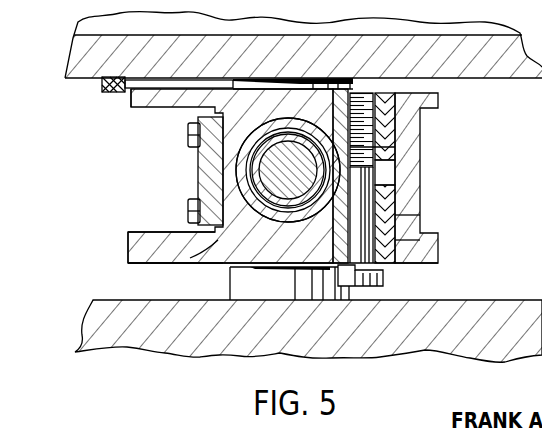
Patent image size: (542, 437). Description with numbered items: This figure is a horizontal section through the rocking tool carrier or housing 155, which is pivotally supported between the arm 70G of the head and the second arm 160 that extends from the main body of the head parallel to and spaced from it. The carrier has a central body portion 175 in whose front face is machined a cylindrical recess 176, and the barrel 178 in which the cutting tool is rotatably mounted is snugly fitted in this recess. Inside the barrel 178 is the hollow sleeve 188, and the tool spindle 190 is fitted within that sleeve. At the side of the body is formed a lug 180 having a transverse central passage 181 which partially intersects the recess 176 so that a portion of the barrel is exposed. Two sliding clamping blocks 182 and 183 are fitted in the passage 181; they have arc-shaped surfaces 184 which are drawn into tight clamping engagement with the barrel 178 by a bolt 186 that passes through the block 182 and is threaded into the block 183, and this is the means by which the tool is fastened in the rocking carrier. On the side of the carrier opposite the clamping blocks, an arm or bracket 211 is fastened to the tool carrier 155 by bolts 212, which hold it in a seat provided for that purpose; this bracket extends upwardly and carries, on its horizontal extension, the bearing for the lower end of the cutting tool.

The rocking tool carrier or housing 155 is at (376, 18).
The platen section 70G is at (475, 75).
The second arm 160 is at (473, 300).
The central body portion 175 is at (178, 264).
The cylindrical recess 176 is at (222, 263).
The barrel 178 is at (258, 172).
The hollow sleeve 188 is at (260, 183).
The tool spindle 190 is at (262, 164).
The arm or bracket 211 is at (203, 160).
The bolts 212 is at (193, 130).
The sliding clamping block 183 is at (387, 133).
The arc-shaped surfaces 184 is at (373, 145).
The lug 180 is at (403, 175).
The transverse central passage 181 is at (393, 215).
The sliding clamping block 182 is at (385, 240).
The bolt 186 is at (383, 280).